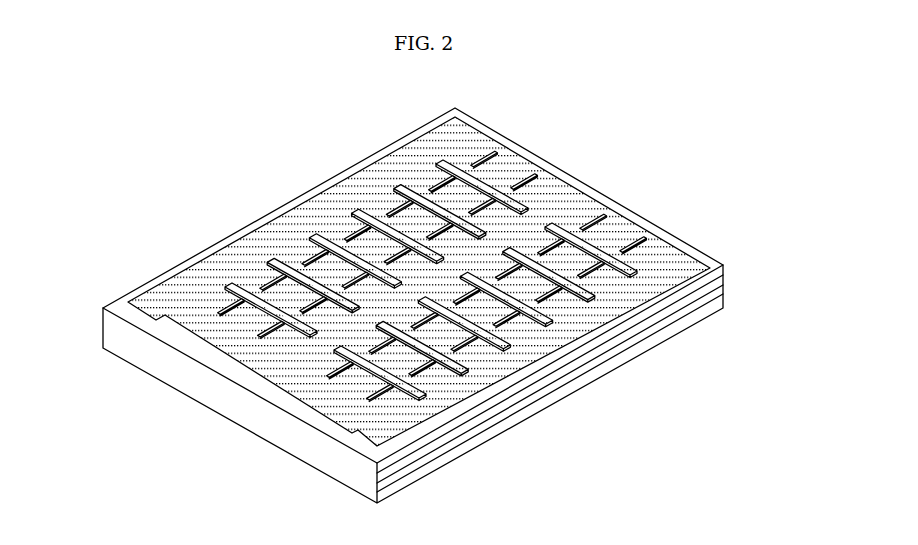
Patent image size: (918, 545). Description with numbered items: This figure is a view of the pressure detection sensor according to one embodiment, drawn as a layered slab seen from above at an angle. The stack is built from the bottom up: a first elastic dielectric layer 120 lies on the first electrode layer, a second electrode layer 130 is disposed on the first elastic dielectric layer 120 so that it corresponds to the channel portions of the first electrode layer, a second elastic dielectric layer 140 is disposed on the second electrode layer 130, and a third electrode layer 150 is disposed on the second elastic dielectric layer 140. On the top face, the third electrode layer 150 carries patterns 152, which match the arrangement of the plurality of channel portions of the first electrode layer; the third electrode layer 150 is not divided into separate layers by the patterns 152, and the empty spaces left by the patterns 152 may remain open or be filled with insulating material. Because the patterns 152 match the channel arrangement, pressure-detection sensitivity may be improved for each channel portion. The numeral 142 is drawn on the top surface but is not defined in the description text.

The first elastic dielectric layer 120 is at (533, 406).
The second electrode layer 130 is at (578, 372).
The second elastic dielectric layer 140 is at (680, 300).
The top surface layer 142 is at (595, 292).
The third electrode layer 150 is at (437, 372).
The patterns 152 is at (583, 232).